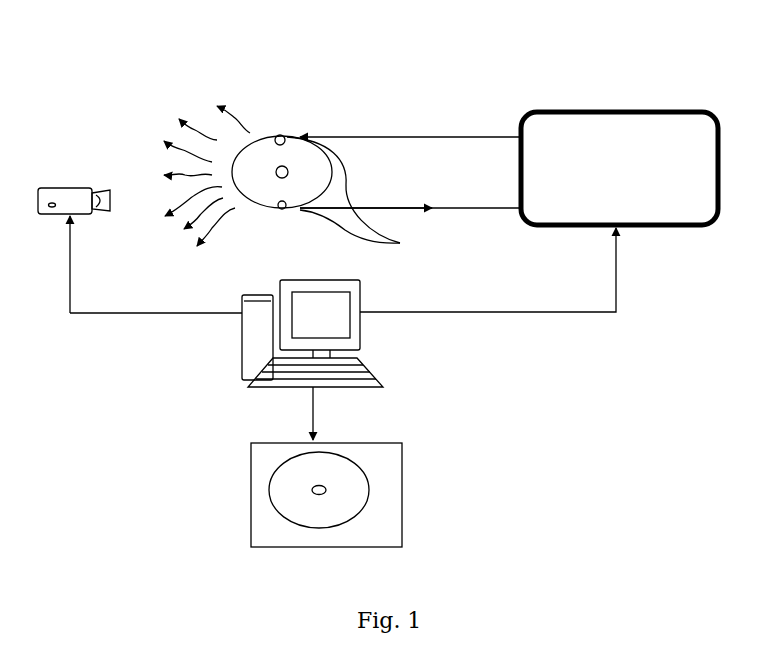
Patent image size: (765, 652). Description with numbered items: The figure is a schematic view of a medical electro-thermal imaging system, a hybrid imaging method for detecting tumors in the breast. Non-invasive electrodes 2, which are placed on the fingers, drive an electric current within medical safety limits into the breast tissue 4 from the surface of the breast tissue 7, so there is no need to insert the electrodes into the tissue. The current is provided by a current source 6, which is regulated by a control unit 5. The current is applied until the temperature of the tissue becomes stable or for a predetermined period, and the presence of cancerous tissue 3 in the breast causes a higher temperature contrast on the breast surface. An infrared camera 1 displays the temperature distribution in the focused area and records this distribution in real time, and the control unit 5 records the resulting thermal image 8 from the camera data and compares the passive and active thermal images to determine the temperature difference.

The infrared camera 1 is at (63, 188).
The electrodes 2 is at (358, 199).
The cancerous tissue (tumor) 3 is at (278, 176).
The breast tissue 4 is at (252, 137).
The control unit 5 is at (347, 333).
The current source 6 is at (623, 177).
The surface of the breast tissue 7 is at (263, 163).
The thermal image 8 is at (387, 505).